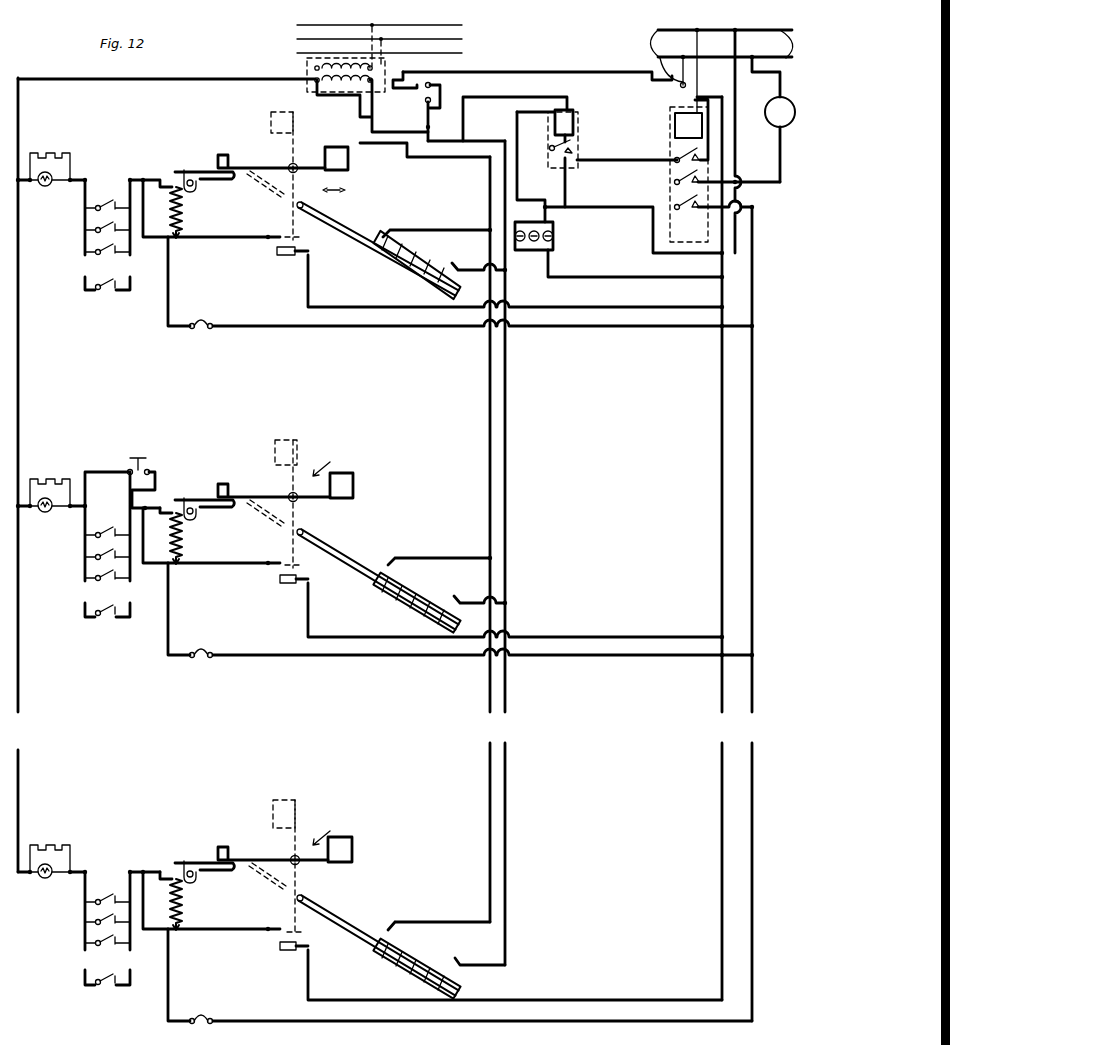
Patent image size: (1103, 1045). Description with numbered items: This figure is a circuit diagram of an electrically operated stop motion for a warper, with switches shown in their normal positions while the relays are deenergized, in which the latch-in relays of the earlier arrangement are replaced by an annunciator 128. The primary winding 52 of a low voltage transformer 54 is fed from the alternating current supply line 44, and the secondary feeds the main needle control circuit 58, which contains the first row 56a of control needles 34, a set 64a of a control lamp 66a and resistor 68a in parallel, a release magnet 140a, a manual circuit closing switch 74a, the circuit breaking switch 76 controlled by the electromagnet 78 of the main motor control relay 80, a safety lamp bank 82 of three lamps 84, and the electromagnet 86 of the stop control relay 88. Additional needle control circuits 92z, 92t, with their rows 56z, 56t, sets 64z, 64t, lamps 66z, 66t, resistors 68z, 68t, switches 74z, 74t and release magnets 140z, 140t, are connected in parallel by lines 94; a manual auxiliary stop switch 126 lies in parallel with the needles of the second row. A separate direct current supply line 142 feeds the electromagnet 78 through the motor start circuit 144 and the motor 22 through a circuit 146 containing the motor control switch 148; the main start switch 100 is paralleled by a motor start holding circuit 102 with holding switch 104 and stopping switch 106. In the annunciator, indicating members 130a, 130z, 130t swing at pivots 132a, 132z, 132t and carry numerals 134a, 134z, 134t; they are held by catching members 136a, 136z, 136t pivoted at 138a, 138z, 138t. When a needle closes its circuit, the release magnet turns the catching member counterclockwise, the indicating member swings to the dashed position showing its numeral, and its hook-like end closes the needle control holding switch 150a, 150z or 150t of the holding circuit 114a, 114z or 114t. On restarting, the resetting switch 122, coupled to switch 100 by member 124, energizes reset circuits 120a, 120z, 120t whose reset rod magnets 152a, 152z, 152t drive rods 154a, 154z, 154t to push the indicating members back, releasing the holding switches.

The motor 22 is at (790, 122).
The control needles 34 is at (107, 205).
The alternating current supply line 44 is at (412, 54).
The primary winding 52 is at (340, 64).
The low voltage transformer 54 is at (303, 68).
The first row of control needles 56a is at (85, 248).
The row of control needles 56z is at (85, 575).
The row of control needles 56t is at (85, 940).
The main needle control circuit 58 is at (66, 78).
The set 64a is at (68, 165).
The set 64z is at (66, 492).
The set 64t is at (66, 858).
The control lamp 66a is at (44, 187).
The control lamp 66z is at (44, 513).
The control lamp 66t is at (44, 879).
The resistor 68a is at (48, 153).
The resistor 68z is at (50, 478).
The resistor 68t is at (52, 844).
The manual circuit closing switch 74a is at (201, 320).
The manual circuit closing switch 74z is at (204, 650).
The manual circuit closing switch 74t is at (204, 1014).
The circuit breaking switch 76 is at (700, 193).
The electromagnet 78 is at (676, 126).
The main motor control relay 80 is at (702, 128).
The safety lamp bank 82 is at (532, 262).
The lamps 84 is at (524, 230).
The electromagnet 86 is at (555, 118).
The stop control relay 88 is at (571, 111).
The additional needle control circuit 92z is at (148, 506).
The additional needle control circuit 92t is at (145, 870).
The lines 94 is at (20, 372).
The main start switch 100 is at (675, 88).
The motor start holding circuit 102 is at (724, 97).
The holding switch 104 is at (676, 158).
The stopping switch 106 is at (571, 147).
The needle control holding circuit 114a is at (218, 238).
The needle control holding circuit 114z is at (148, 566).
The needle control holding circuit 114t is at (195, 929).
The reset circuit 120a is at (484, 270).
The reset circuit 120z is at (422, 558).
The reset circuit 120t is at (422, 922).
The resetting switch 122 is at (440, 80).
The member 124 is at (540, 72).
The manual auxiliary stop switch 126 is at (140, 458).
The annunciator 128 is at (345, 194).
The indicating member 130a is at (262, 158).
The indicating member 130z is at (262, 491).
The indicating member 130t is at (263, 851).
The pivot 132a is at (296, 164).
The pivot 132z is at (296, 493).
The pivot 132t is at (298, 856).
The numeral 134a is at (349, 170).
The numeral 134z is at (354, 497).
The numeral 134t is at (353, 857).
The catching member 136a is at (210, 168).
The catching member 136z is at (208, 498).
The catching member 136t is at (208, 861).
The pivot 138a is at (190, 179).
The pivot 138z is at (194, 515).
The pivot 138t is at (194, 878).
The release magnet 140a is at (184, 211).
The release magnet 140z is at (184, 542).
The release magnet 140t is at (184, 899).
The direct current supply line 142 is at (792, 30).
The motor start circuit 144 is at (710, 31).
The circuit 146 is at (795, 82).
The motor control switch 148 is at (668, 174).
The needle control holding switch 150a is at (280, 253).
The needle control holding switch 150z is at (297, 578).
The needle control holding switch 150t is at (297, 944).
The reset rod magnet 152a is at (403, 253).
The reset rod magnet 152z is at (403, 586).
The reset rod magnet 152t is at (403, 950).
The rod 154a is at (333, 226).
The rod 154z is at (331, 552).
The rod 154t is at (343, 916).